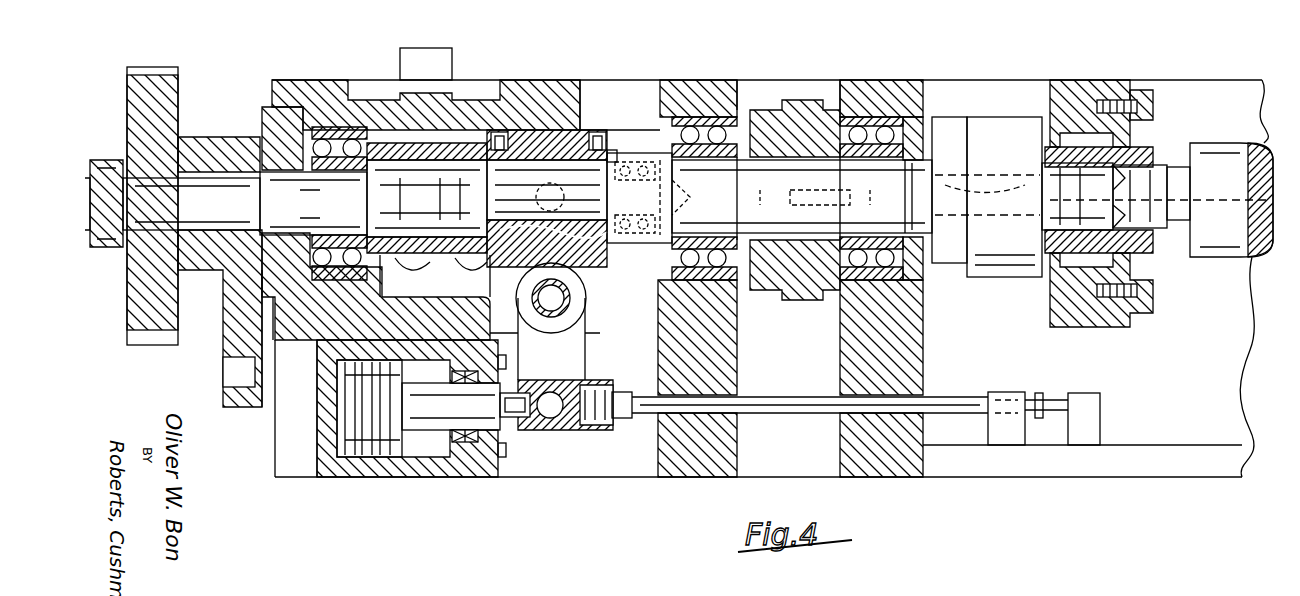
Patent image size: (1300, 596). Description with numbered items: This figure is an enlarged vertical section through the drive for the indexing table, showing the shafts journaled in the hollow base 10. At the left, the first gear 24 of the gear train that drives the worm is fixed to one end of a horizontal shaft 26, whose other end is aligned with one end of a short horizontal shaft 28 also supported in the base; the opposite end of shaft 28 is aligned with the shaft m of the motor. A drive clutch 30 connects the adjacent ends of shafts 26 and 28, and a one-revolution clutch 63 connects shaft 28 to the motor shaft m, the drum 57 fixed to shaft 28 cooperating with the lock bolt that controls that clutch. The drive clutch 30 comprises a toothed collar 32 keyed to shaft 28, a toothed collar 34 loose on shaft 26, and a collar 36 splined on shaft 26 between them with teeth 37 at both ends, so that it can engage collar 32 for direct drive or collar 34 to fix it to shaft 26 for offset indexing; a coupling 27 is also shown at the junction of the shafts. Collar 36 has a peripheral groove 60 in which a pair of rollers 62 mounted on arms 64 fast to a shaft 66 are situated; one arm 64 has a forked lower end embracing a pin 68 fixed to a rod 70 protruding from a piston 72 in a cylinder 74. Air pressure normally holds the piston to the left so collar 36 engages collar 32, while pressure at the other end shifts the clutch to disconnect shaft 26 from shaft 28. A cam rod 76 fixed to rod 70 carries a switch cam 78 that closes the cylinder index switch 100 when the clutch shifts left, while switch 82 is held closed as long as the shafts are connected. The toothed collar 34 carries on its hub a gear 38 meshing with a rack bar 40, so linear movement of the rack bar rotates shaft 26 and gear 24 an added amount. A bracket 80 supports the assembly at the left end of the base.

The hollow base 10 is at (1218, 432).
The first gear 24 is at (150, 80).
The shaft 26 is at (226, 203).
The coupling 27 is at (695, 197).
The short shaft 28 is at (802, 196).
The drive clutch 30 is at (523, 108).
The toothed collar 32 is at (637, 130).
The toothed collar 34 is at (473, 132).
The collar 36 is at (543, 137).
The teeth 37 is at (499, 130).
The gear 38 is at (423, 265).
The rack bar 40 is at (420, 65).
The drum 57 is at (797, 110).
The peripheral groove 60 is at (573, 123).
The rollers 62 is at (590, 97).
The one-revolution clutch 63 is at (1010, 105).
The arms 64 is at (583, 323).
The shaft 66 is at (518, 297).
The pin 68 is at (553, 397).
The rod 70 is at (592, 430).
The piston 72 is at (377, 455).
The cylinder 74 is at (425, 467).
The cam rod 76 is at (820, 378).
The switch cam 78 is at (1038, 393).
The bracket 80 is at (230, 340).
The switch 82 is at (1002, 392).
The cylinder index switch 100 is at (1093, 407).
The motor shaft m is at (1153, 170).